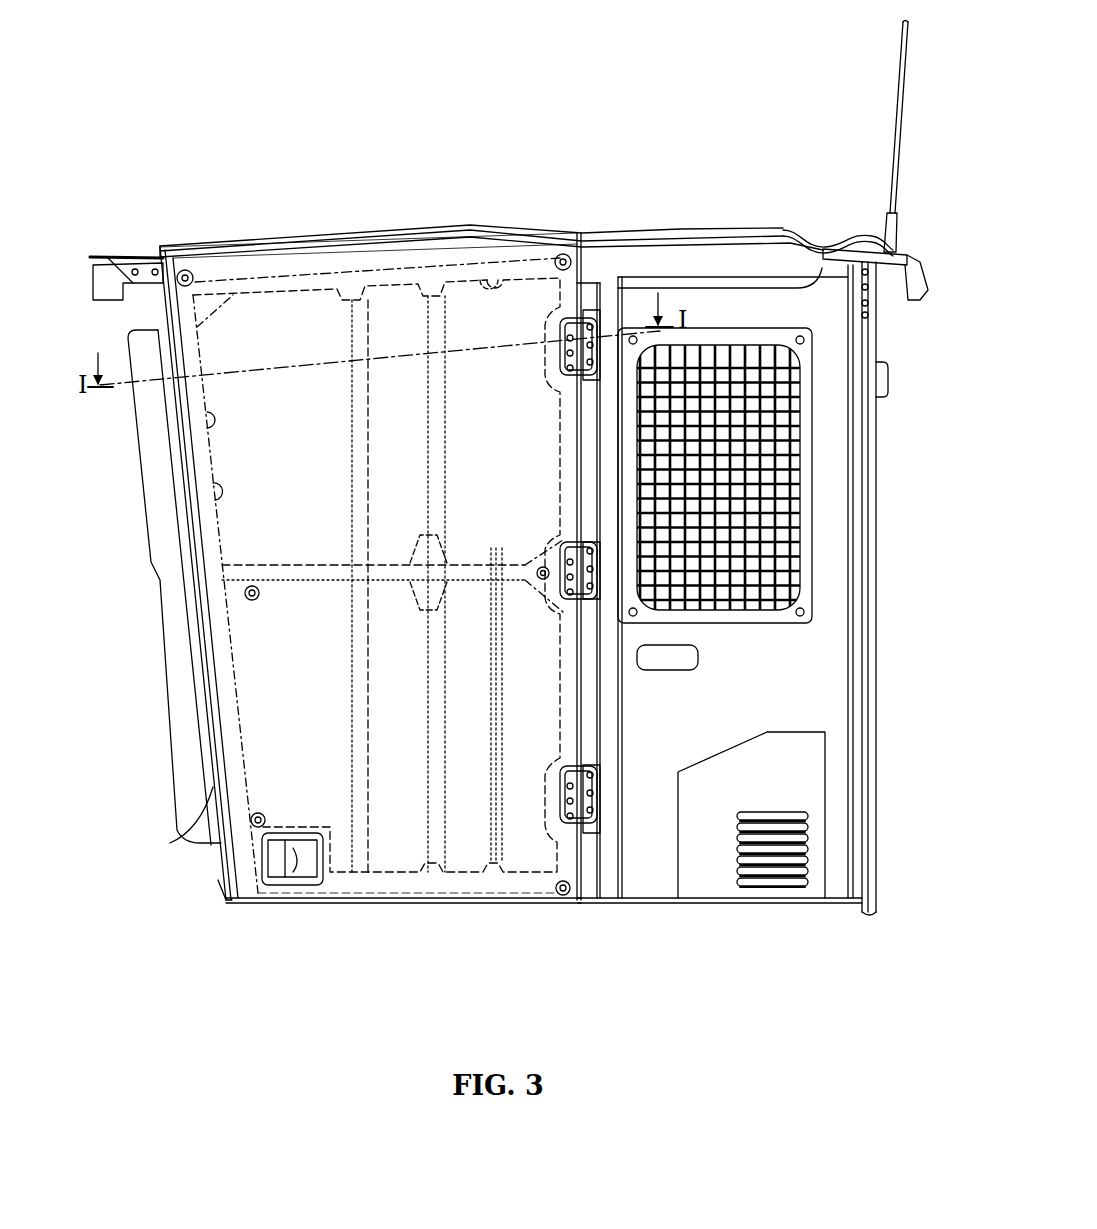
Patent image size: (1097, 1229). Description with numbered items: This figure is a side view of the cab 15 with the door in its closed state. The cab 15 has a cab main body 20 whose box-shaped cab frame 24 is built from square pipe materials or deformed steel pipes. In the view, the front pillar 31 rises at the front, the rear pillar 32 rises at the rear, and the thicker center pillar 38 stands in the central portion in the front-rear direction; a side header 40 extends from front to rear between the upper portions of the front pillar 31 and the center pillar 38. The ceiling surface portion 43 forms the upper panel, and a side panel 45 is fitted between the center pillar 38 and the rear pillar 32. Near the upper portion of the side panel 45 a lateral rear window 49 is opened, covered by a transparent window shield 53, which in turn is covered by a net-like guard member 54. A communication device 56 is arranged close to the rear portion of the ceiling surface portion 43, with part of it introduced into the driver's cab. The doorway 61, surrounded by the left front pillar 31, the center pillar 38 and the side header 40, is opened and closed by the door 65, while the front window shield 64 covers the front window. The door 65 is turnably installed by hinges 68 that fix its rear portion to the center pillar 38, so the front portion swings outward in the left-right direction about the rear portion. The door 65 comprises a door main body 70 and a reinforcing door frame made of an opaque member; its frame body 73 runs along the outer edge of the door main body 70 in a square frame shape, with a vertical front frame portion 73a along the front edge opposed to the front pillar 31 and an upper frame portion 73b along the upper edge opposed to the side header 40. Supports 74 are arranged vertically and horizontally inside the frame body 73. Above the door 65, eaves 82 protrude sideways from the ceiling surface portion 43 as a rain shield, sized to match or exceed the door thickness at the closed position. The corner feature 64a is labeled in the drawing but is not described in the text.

The cab 15 is at (571, 148).
The cab main body 20 is at (304, 228).
The cab frame 24 is at (592, 856).
The front pillar 31 is at (205, 688).
The rear pillar 32 is at (850, 878).
The center pillar 38 is at (599, 888).
The side header 40 is at (205, 247).
The ceiling surface portion 43 is at (571, 232).
The side panel 45 is at (712, 885).
The lateral rear window 49 is at (738, 612).
The window shield 53 is at (770, 600).
The net-like guard member 54 is at (698, 630).
The communication device 56 is at (778, 212).
The doorway 61 is at (517, 862).
The front window shield 64 is at (172, 845).
The lower corner 64a is at (222, 884).
The door 65 is at (366, 906).
The hinge 68 is at (594, 318).
The door main body 70 is at (444, 890).
The frame body 73 is at (205, 428).
The front frame portion 73a is at (222, 490).
The upper frame portion 73b is at (488, 278).
The support 74 is at (430, 440).
The eaves 82 is at (388, 238).